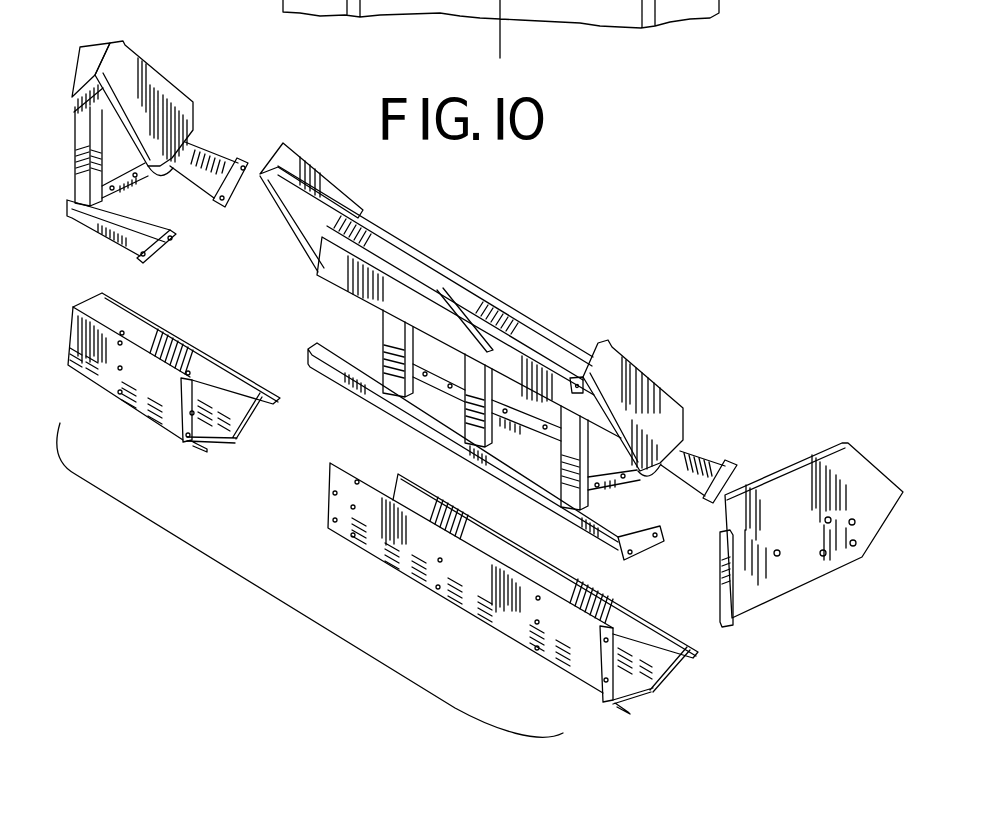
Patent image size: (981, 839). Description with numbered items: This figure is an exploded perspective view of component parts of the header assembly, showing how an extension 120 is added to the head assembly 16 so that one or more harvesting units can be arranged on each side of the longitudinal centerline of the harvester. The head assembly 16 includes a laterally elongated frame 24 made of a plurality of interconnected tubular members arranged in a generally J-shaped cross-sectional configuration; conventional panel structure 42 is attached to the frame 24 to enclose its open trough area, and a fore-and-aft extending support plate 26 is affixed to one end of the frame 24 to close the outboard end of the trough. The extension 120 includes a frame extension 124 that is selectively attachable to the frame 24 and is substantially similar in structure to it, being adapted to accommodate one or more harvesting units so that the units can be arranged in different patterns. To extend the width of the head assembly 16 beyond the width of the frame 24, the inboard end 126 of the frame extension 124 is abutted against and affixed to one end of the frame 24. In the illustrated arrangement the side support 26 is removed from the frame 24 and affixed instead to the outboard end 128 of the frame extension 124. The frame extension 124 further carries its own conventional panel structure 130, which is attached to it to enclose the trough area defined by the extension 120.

The head assembly 16 is at (547, 216).
The frame 24 is at (157, 70).
The support plate 26 is at (787, 495).
The panel structure 42 is at (198, 349).
The extension 120 is at (539, 299).
The frame extension 124 is at (349, 291).
The inboard end 126 is at (336, 190).
The outboard end 128 is at (648, 395).
The panel structure 130 is at (332, 507).